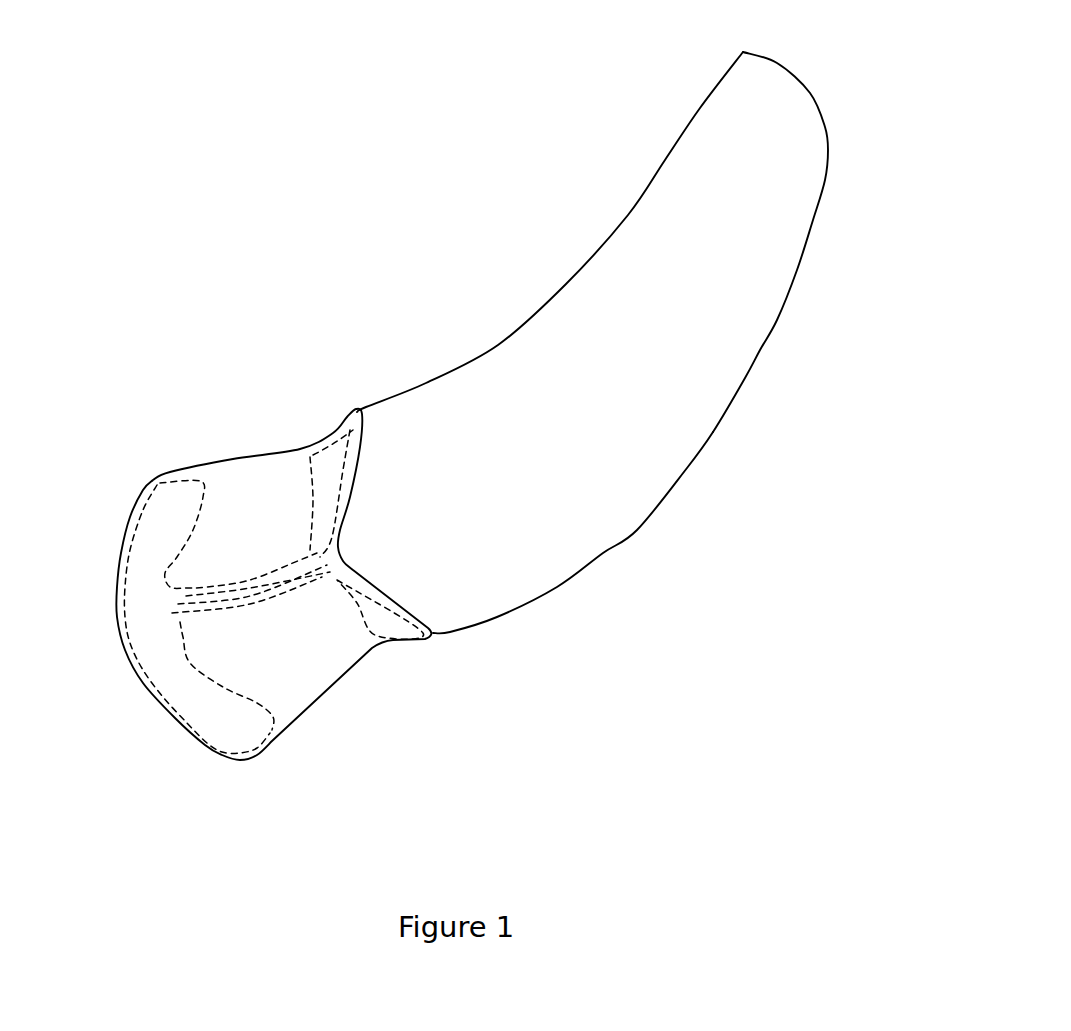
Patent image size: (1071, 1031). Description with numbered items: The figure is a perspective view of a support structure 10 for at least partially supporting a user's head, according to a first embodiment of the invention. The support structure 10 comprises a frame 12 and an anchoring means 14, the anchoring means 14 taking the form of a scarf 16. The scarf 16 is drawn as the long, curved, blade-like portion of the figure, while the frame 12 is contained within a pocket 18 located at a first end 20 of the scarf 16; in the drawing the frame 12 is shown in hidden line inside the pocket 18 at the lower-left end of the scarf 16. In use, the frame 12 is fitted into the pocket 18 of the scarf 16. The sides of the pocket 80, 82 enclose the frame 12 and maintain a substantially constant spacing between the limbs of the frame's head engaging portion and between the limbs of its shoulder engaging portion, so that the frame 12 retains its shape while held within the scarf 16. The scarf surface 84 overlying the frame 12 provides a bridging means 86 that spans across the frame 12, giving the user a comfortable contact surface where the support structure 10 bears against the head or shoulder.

The support structure 10 is at (507, 157).
The frame 12 is at (243, 725).
The anchoring means 14 is at (593, 523).
The scarf 16 is at (687, 405).
The pocket 18 is at (270, 485).
The first end 20 is at (153, 480).
The side of the pocket 80 is at (117, 627).
The side of the pocket 82 is at (347, 568).
The scarf surface 84 is at (297, 690).
The bridging means 86 is at (222, 480).